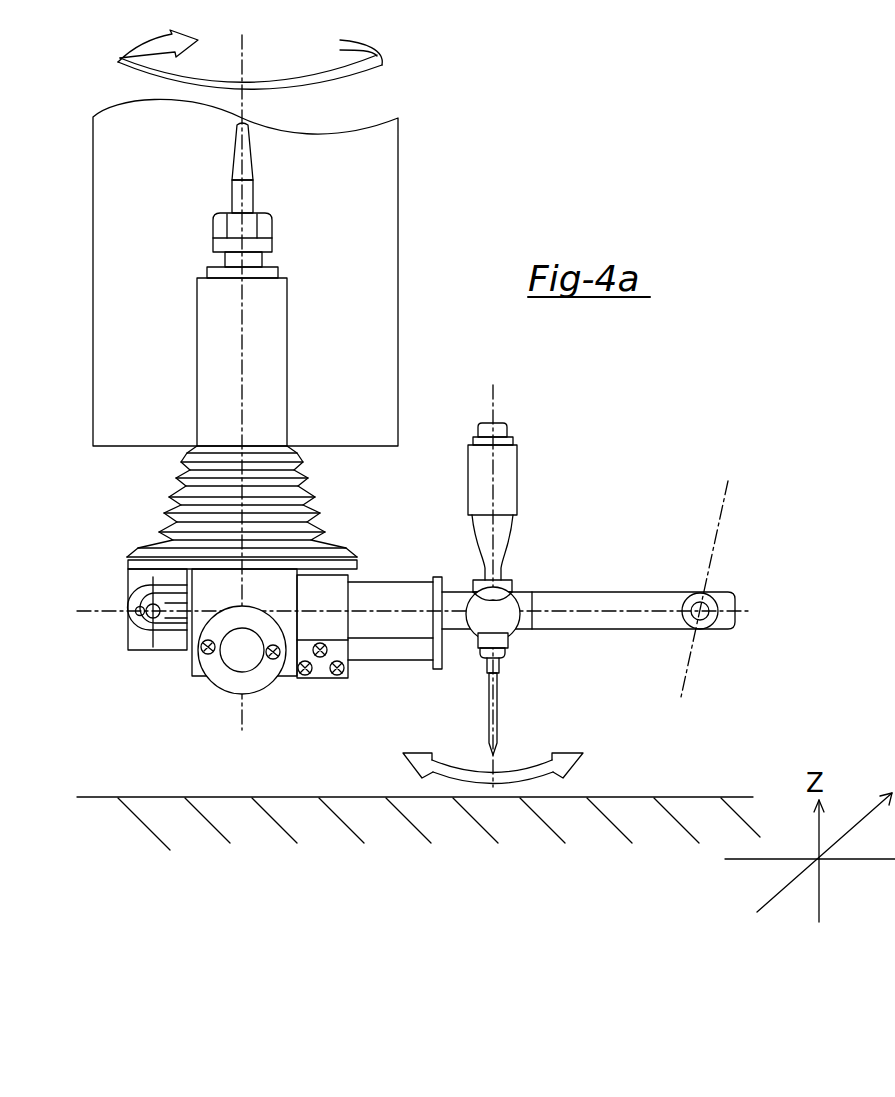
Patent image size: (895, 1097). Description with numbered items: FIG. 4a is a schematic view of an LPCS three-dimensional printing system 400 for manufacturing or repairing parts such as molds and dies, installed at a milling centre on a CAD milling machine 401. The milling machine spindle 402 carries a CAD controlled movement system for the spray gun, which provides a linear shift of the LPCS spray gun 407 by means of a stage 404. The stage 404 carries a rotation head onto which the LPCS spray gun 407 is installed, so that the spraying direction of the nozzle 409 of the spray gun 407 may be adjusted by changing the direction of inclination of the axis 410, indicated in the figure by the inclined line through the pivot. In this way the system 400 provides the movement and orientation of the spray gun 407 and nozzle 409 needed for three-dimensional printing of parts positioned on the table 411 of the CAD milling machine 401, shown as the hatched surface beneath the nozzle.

The LPCS 3D printing system 400 is at (545, 72).
The CAD milling machine 401 is at (390, 192).
The milling machine spindle 402 is at (275, 390).
The stage 404 is at (142, 628).
The LPCS spray gun 407 is at (515, 494).
The nozzle 409 is at (497, 706).
The axis 410 is at (728, 481).
The table 411 is at (338, 798).